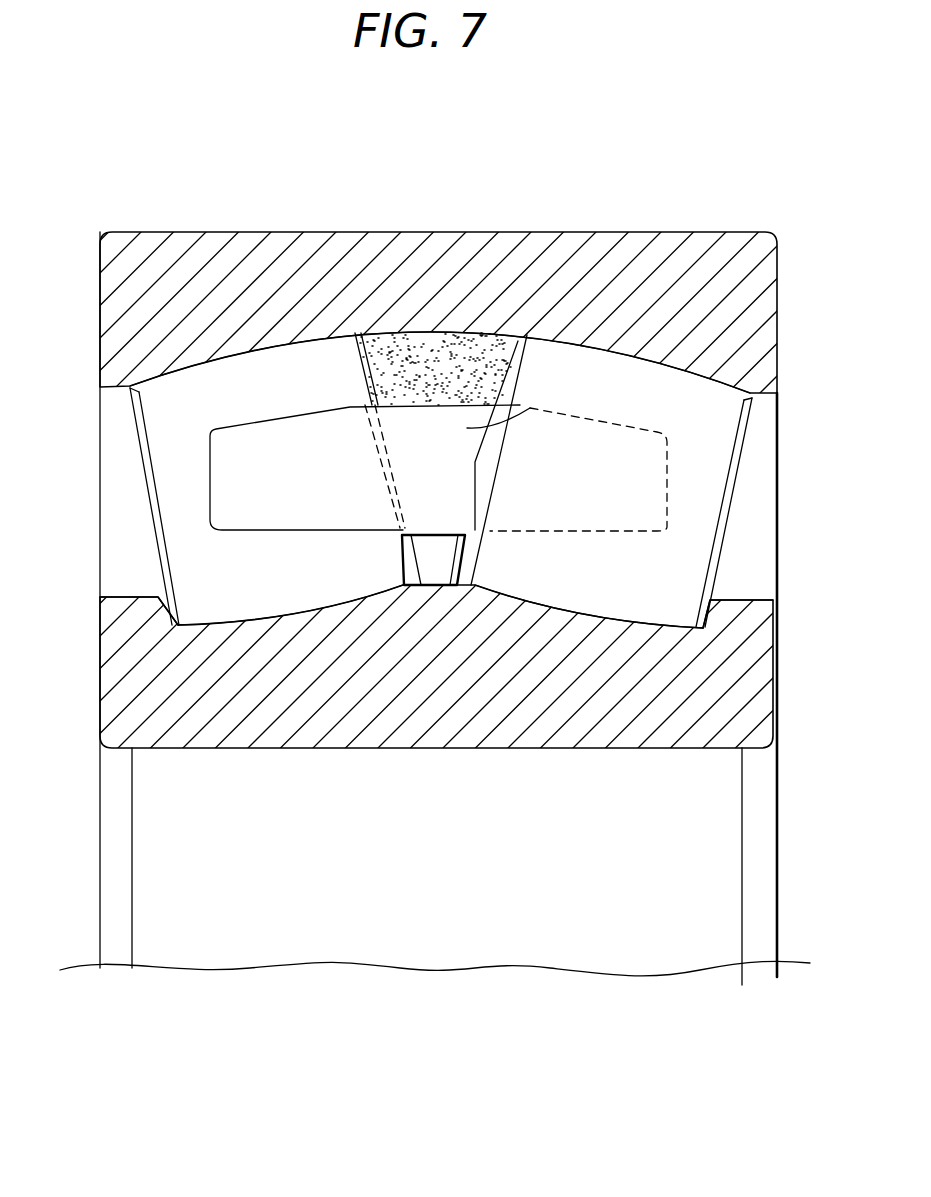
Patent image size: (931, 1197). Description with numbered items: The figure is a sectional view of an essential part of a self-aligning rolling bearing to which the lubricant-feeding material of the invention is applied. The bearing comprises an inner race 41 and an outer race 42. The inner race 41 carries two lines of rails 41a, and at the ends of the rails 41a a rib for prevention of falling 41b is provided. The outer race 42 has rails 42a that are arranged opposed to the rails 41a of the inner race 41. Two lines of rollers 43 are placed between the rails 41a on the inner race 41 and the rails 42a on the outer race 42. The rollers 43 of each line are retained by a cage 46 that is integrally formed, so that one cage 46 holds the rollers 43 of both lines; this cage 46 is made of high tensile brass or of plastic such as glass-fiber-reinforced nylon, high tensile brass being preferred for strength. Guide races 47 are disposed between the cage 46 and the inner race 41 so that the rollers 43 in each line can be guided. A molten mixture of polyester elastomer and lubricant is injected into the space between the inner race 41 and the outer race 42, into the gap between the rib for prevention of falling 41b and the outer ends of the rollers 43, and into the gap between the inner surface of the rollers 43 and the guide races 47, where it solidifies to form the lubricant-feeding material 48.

The inner race 41 is at (224, 735).
The rails 41a is at (291, 603).
The rib for prevention of falling 41b is at (135, 612).
The outer race 42 is at (632, 247).
The rails 42a is at (240, 356).
The rollers 43 is at (175, 449).
The cage 46 is at (467, 428).
The guide races 47 is at (436, 570).
The lubricant-feeding material 48 is at (412, 350).